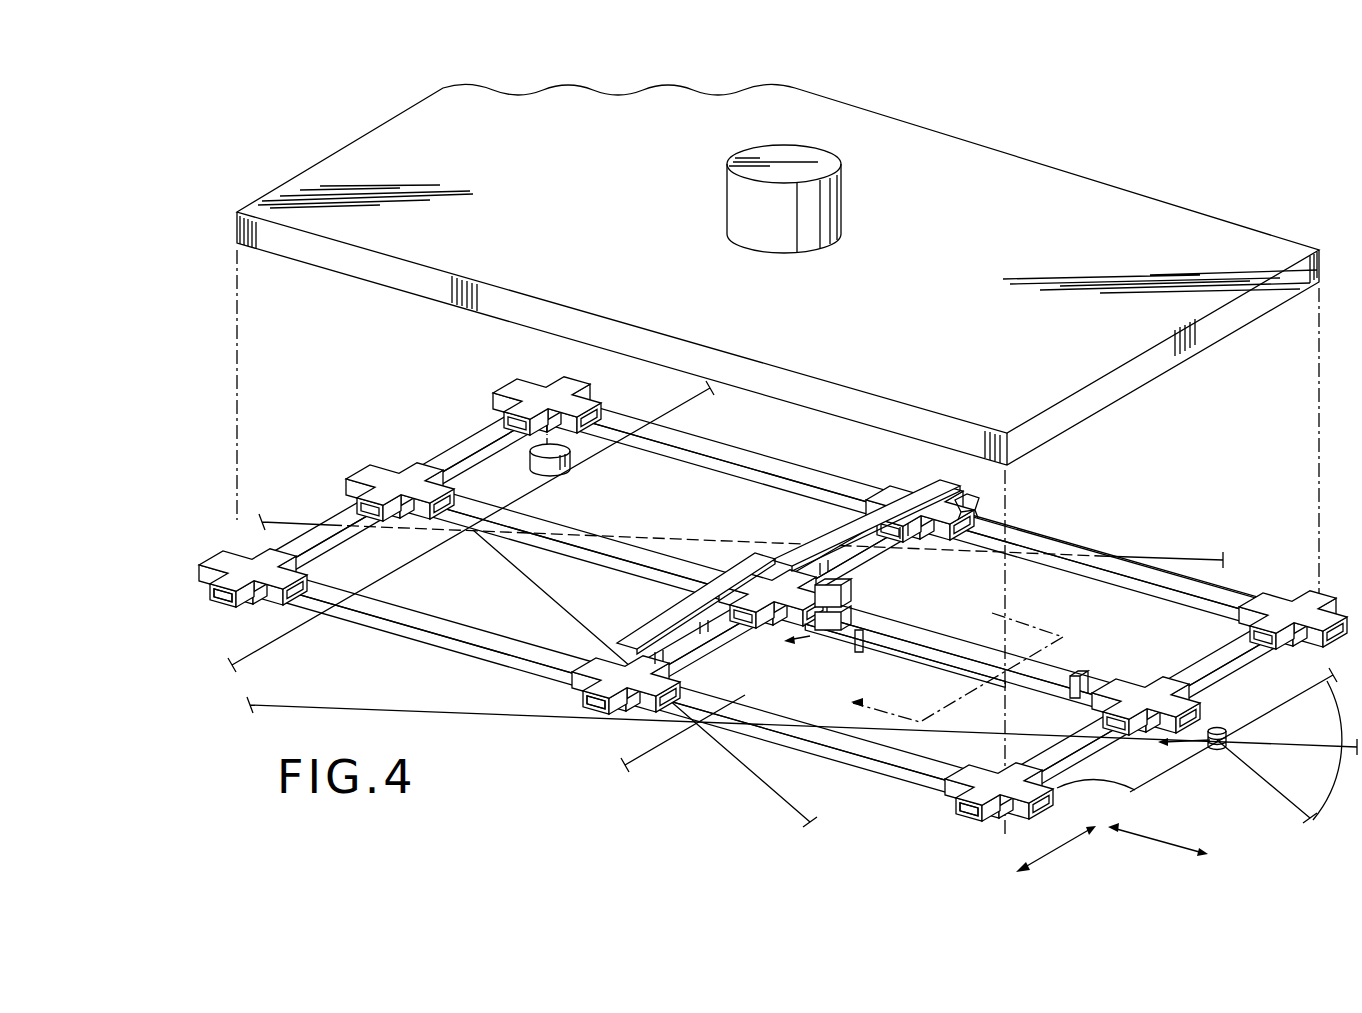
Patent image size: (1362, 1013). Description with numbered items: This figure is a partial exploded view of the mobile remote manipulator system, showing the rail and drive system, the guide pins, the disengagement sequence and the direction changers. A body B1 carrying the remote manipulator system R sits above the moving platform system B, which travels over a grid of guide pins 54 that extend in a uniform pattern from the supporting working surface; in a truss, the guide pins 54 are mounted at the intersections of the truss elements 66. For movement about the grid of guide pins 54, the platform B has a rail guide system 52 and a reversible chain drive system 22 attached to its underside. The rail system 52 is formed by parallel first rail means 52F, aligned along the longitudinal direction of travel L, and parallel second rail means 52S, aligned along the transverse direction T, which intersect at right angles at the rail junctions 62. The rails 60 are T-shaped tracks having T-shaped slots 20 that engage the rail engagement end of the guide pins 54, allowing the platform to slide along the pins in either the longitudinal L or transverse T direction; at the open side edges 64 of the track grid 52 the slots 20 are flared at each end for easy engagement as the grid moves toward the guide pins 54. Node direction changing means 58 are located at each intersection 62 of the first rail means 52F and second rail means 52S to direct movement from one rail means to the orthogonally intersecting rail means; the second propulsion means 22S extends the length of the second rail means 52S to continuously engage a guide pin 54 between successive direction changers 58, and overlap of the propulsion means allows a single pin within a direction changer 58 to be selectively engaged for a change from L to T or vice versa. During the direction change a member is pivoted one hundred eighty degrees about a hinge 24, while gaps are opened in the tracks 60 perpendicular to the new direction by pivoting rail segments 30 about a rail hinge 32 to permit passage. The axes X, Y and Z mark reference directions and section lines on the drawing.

The body / base structure B1 is at (326, 157).
The remote manipulator system R is at (781, 220).
The moving platform system B is at (1125, 549).
The T-shaped slot 20 is at (215, 617).
The reversible chain drive system 22 is at (808, 547).
The second propulsion means 22S is at (880, 653).
The hinge 24 is at (1084, 688).
The pivoting rail segment 30 is at (952, 522).
The rail hinge 32 is at (969, 507).
The rail guide system 52 is at (853, 757).
The first rail means 52F is at (375, 448).
The second rail means 52S is at (477, 630).
The guide pin 54 is at (1220, 750).
The node direction changing means 58 is at (545, 468).
The rail 60 is at (460, 646).
The rail junction 62 is at (546, 393).
The open side edge 64 is at (1160, 746).
The truss element 66 is at (327, 705).
The X axis X is at (1176, 747).
The Y section line Y is at (950, 660).
The Z axis Z is at (785, 639).
The longitudinal direction L is at (1053, 849).
The transverse direction T is at (1158, 838).